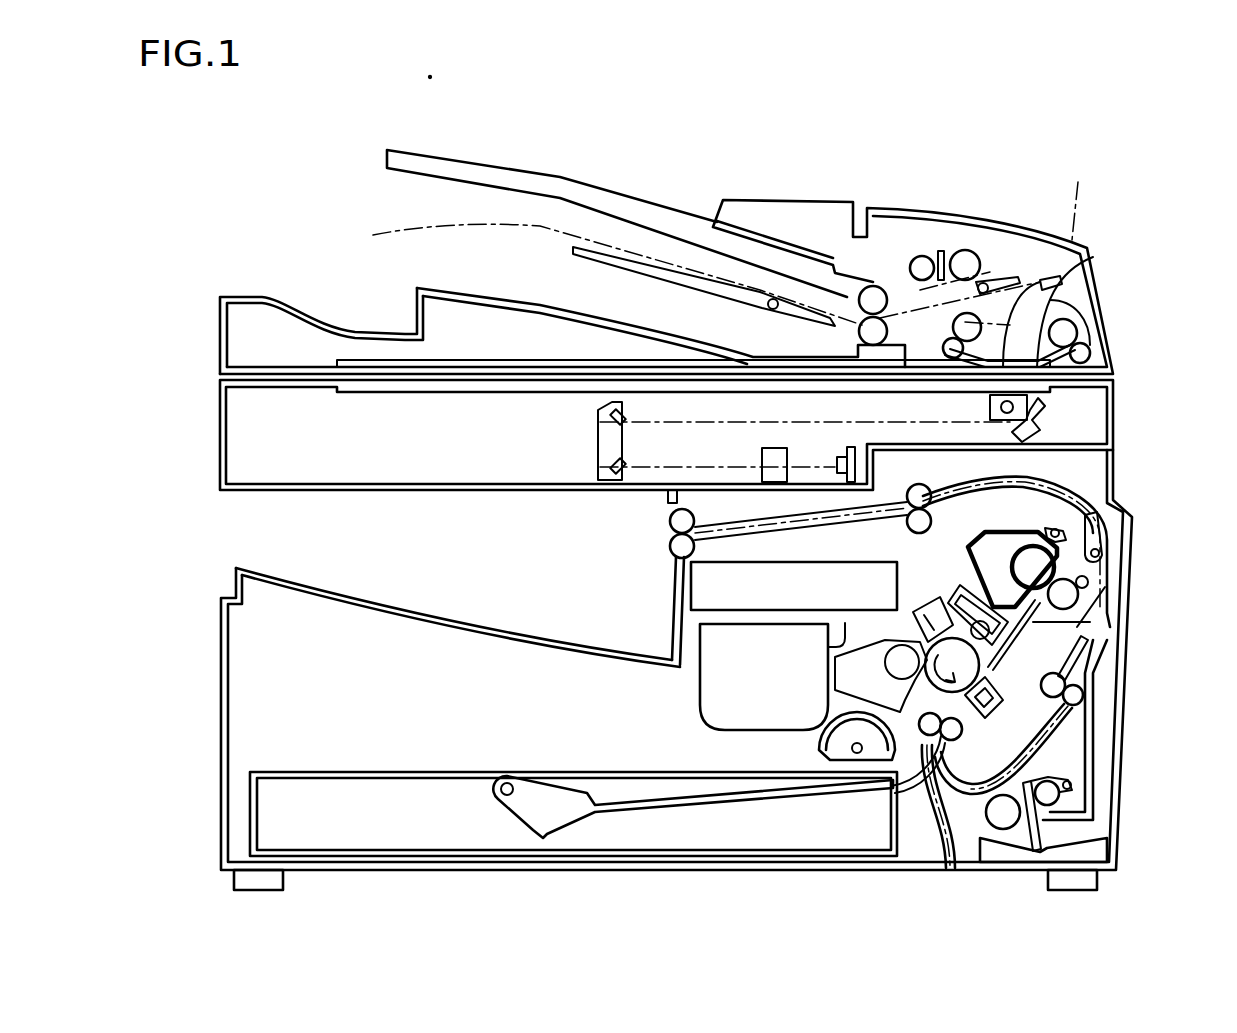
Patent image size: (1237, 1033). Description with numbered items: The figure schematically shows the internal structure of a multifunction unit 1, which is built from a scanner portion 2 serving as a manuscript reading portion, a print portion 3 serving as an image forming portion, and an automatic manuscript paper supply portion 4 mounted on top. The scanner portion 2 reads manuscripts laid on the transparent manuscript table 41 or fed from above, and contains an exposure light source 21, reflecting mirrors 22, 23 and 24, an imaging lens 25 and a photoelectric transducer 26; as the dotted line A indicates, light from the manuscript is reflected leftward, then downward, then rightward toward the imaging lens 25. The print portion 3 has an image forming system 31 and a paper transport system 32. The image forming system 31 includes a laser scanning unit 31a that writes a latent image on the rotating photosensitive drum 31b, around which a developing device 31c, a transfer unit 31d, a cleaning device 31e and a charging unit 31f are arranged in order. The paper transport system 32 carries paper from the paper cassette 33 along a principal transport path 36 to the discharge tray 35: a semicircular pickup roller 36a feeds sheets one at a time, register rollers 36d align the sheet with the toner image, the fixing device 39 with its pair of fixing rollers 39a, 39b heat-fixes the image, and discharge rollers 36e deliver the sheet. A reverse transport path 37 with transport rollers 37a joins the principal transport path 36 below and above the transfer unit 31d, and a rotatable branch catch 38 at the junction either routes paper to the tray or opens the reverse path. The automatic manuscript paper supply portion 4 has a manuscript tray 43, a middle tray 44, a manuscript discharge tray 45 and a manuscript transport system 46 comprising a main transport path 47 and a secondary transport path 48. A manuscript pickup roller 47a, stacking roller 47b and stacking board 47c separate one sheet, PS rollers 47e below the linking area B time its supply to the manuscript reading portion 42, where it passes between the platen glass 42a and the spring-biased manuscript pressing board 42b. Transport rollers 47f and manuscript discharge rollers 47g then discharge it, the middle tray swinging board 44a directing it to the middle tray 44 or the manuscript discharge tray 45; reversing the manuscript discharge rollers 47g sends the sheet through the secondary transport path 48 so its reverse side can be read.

The multifunction unit 1 is at (158, 190).
The scanner portion 2 is at (1126, 431).
The print portion 3 is at (1139, 506).
The automatic manuscript paper supply portion 4 is at (931, 189).
The exposure light source 21 is at (988, 407).
The reflecting mirror 22 is at (1037, 432).
The reflecting mirror 23 is at (597, 418).
The reflecting mirror 24 is at (597, 470).
The imaging lens 25 is at (762, 457).
The photoelectric transducer 26 is at (838, 458).
The image forming system 31 is at (676, 694).
The laser scanning unit 31a is at (690, 593).
The photosensitive drum 31b is at (992, 700).
The developing device 31c is at (828, 675).
The transfer unit 31d is at (1015, 727).
The cleaning device 31e is at (977, 583).
The charging unit 31f is at (927, 610).
The paper transport system 32 is at (1061, 747).
The paper cassette 33 is at (750, 853).
The discharge tray 35 is at (468, 622).
The principal transport path 36 is at (982, 660).
The pickup roller 36a is at (818, 735).
The register rollers 36d is at (953, 741).
The discharge rollers 36e is at (665, 552).
The reverse transport path 37 is at (1110, 600).
The transport rollers 37a is at (1065, 697).
The branch catch 38 is at (1100, 545).
The fixing device 39 is at (1007, 530).
The fixing roller 39a is at (1056, 570).
The fixing roller 39b is at (1068, 612).
The manuscript table 41 is at (390, 377).
The manuscript reading portion 42 is at (1068, 401).
The platen glass 42a is at (1058, 280).
The manuscript pressing board 42b is at (1093, 257).
The manuscript tray 43 is at (590, 178).
The middle tray 44 is at (630, 247).
The middle tray swinging board 44a is at (768, 312).
The manuscript discharge tray 45 is at (540, 307).
The manuscript transport system 46 is at (1040, 252).
The main transport path 47 is at (1085, 318).
The manuscript pickup roller 47a is at (920, 257).
The stacking roller 47b is at (965, 250).
The stacking board 47c is at (975, 280).
The PS rollers 47e is at (1078, 335).
The transport rollers 47f is at (948, 338).
The manuscript discharge rollers 47g is at (860, 330).
The secondary transport path 48 is at (985, 333).
The dotted line A is at (780, 420).
The area B is at (732, 235).